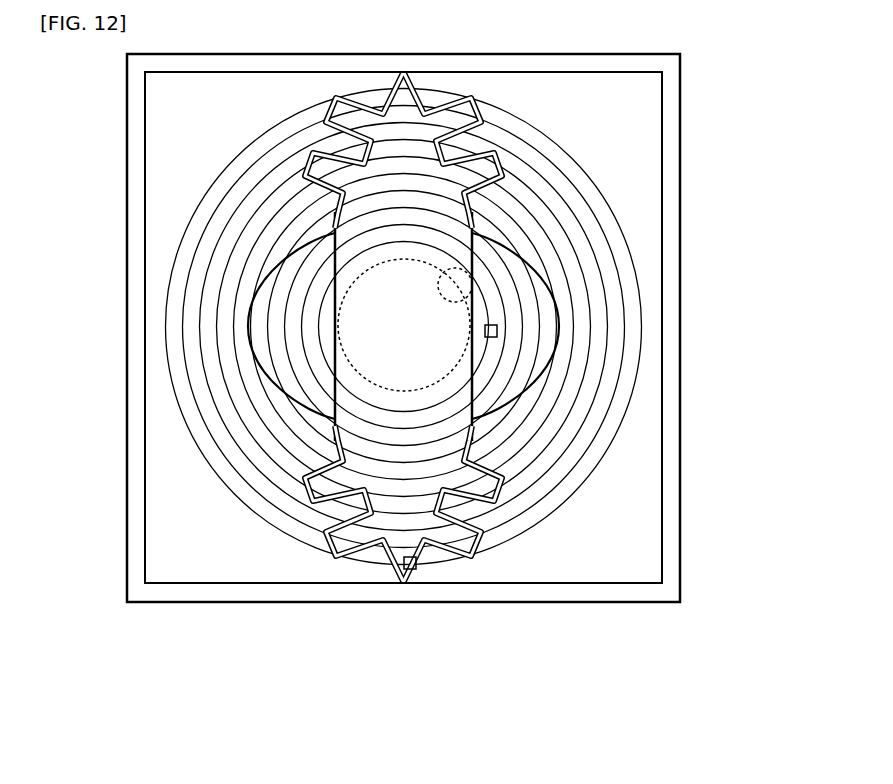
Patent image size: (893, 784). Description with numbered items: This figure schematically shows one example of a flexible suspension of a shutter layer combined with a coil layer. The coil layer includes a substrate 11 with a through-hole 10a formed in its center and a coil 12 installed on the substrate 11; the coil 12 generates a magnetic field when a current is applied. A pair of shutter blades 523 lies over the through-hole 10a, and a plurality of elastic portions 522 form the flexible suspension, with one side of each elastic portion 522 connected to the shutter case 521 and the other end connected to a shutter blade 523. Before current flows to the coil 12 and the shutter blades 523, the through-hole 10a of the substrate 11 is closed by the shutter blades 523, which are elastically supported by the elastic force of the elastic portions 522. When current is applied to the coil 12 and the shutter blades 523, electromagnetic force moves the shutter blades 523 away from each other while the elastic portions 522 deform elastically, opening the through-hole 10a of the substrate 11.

The through-hole 10a is at (466, 266).
The substrate 11 is at (592, 590).
The coil 12 is at (595, 458).
The shutter case 521 is at (300, 576).
The elastic portions 522 is at (328, 148).
The shutter blades 523 is at (257, 319).